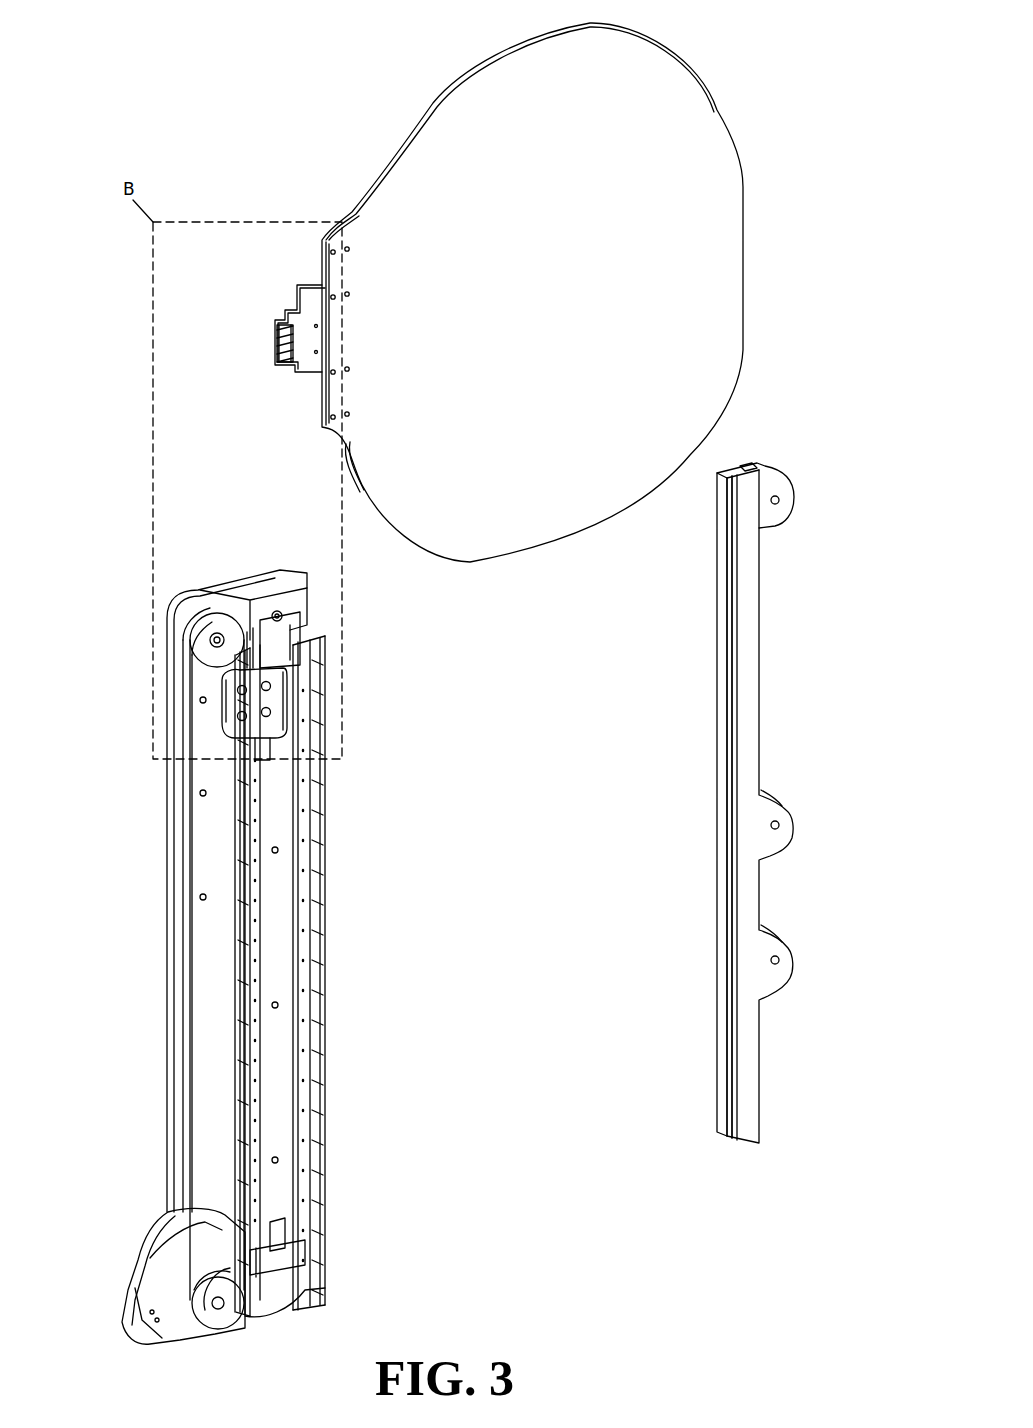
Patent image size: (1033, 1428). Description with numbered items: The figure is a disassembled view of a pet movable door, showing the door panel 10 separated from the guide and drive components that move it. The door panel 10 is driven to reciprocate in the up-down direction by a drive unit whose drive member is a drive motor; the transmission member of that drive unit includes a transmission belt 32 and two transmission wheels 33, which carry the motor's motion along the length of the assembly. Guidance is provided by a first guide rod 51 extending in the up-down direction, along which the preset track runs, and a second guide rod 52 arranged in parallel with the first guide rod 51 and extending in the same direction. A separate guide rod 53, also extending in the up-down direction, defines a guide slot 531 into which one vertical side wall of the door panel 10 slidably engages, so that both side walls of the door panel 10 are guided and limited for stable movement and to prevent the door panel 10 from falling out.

The door panel 10 is at (382, 198).
The transmission belt 32 is at (190, 885).
The transmission wheels 33 is at (212, 1285).
The first guide rod 51 is at (305, 822).
The second guide rod 52 is at (255, 925).
The guide rod 53 is at (750, 657).
The guide slot 531 is at (727, 540).